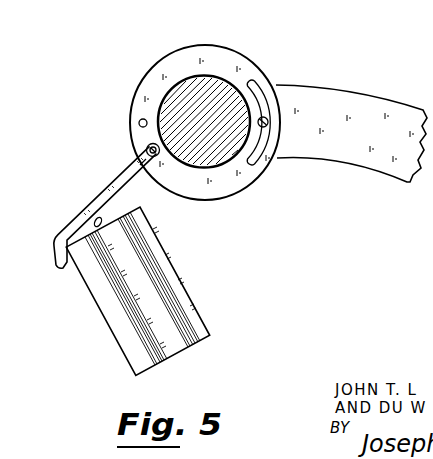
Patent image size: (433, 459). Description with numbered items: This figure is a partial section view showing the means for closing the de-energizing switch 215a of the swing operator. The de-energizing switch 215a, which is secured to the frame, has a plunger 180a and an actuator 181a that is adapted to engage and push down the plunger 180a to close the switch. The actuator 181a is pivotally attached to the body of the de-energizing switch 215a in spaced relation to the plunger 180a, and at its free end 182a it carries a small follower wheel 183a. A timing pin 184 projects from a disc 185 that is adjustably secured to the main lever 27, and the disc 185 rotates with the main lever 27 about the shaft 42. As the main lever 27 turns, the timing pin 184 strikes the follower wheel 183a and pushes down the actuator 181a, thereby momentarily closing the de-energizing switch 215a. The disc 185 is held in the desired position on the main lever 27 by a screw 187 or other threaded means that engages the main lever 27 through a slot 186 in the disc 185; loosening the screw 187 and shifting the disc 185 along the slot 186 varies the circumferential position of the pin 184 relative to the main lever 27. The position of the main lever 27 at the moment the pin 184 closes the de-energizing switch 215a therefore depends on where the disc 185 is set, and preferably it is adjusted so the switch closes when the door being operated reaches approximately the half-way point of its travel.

The main lever 27 is at (353, 172).
The shaft 42 is at (220, 165).
The plunger 180a is at (102, 219).
The actuator 181a is at (90, 192).
The free end 182a is at (140, 165).
The follower wheel 183a is at (147, 147).
The timing pin 184 is at (140, 121).
The disc 185 is at (233, 52).
The slot 186 is at (257, 86).
The screw 187 is at (268, 126).
The de-energizing switch 215a is at (193, 303).